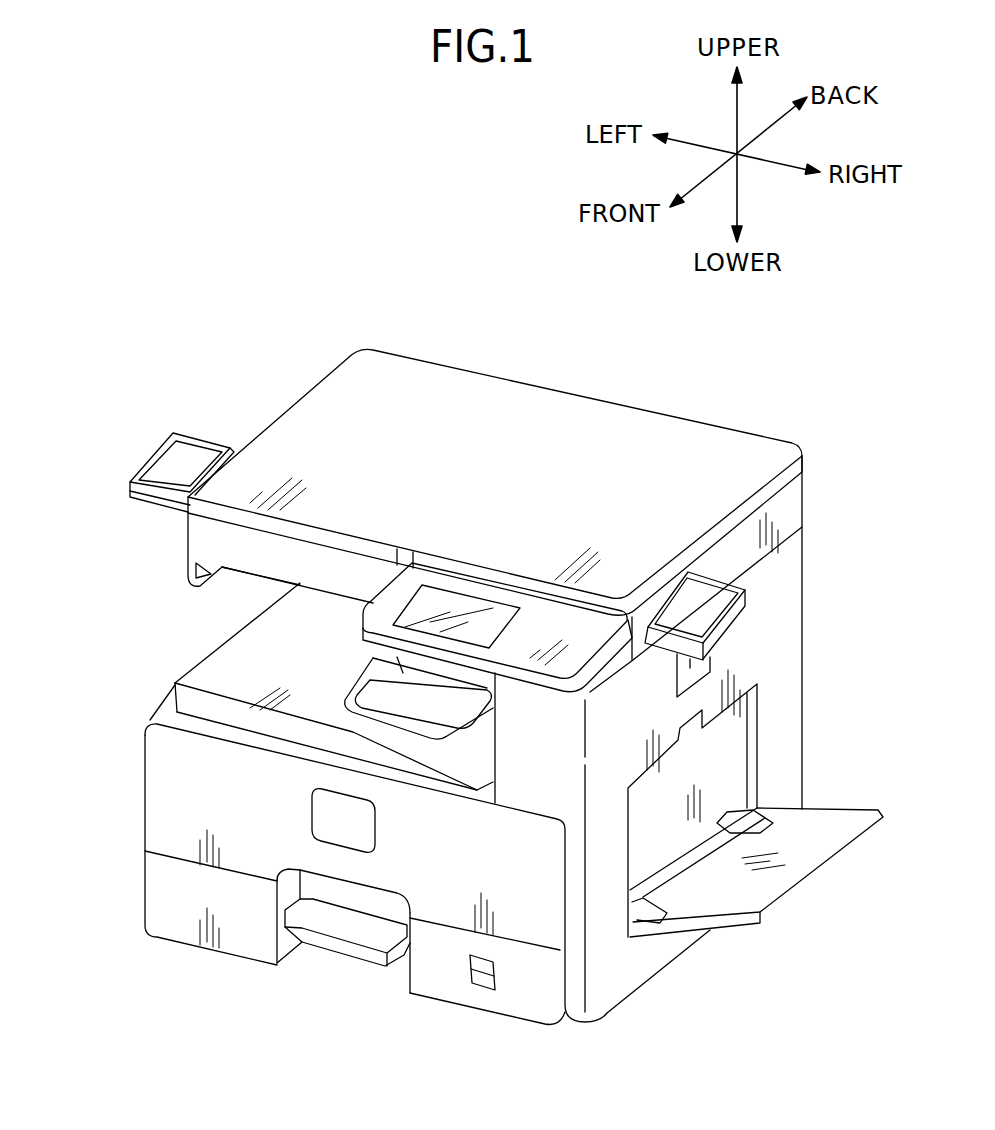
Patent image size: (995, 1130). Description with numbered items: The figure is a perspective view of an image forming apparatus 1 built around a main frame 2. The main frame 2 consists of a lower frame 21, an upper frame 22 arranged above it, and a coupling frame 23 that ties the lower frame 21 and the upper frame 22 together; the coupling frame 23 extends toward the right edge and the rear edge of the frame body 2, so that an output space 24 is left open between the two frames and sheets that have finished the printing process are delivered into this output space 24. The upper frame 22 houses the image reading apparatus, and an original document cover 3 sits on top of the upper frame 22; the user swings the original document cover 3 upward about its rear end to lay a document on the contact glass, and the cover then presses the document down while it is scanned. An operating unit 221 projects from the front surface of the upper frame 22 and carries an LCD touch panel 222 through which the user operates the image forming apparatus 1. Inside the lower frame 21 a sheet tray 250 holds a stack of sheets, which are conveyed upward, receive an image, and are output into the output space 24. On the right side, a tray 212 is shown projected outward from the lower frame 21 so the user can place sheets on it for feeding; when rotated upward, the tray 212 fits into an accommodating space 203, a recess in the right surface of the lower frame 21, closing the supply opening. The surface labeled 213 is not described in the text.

The image forming apparatus 1 is at (774, 383).
The main frame 2 is at (810, 590).
The original document cover 3 is at (324, 436).
The lower frame 21 is at (147, 808).
The upper frame 22 is at (183, 537).
The coupling frame 23 is at (521, 762).
The output space 24 is at (258, 593).
The accommodating space 203 is at (727, 732).
The tray 212 is at (821, 824).
The top plate 213 is at (218, 662).
The operating unit 221 is at (543, 628).
The LCD touch panel 222 is at (446, 607).
The sheet tray 250 is at (446, 981).